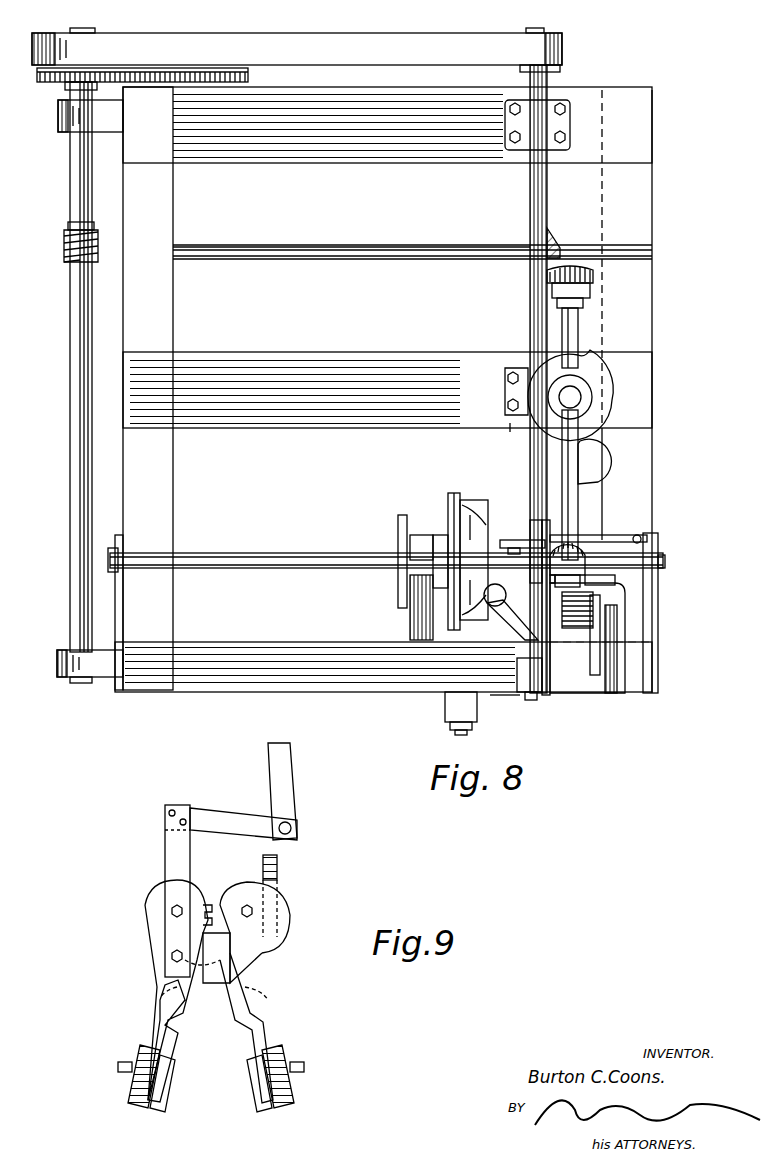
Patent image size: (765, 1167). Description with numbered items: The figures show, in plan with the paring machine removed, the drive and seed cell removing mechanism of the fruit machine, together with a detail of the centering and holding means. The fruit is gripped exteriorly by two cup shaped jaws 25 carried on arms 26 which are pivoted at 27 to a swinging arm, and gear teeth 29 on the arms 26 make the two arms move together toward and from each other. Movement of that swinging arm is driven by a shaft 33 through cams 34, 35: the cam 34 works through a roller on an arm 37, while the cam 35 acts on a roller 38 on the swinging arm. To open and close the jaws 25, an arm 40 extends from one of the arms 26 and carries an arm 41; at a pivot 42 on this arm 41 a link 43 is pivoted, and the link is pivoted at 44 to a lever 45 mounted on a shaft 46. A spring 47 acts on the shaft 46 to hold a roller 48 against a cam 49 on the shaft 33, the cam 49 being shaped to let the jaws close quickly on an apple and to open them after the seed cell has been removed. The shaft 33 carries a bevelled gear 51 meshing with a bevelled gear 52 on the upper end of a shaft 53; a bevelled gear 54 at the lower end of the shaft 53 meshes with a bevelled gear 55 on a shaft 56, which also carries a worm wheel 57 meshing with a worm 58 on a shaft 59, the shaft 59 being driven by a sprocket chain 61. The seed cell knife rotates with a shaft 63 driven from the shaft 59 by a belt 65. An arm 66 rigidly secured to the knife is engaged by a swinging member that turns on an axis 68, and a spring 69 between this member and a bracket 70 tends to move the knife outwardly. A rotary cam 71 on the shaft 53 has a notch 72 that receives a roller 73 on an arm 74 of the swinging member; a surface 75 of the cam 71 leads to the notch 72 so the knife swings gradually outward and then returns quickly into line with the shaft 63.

In FIG. 9, the cup shaped jaws 25 is at (162, 1095).
In FIG. 9, the arms 26 is at (172, 1002).
In FIG. 9, the pivot 27 is at (172, 912).
In FIG. 9, the gear teeth 29 is at (212, 905).
In FIG. 8, the shaft 33 is at (276, 553).
In FIG. 8, the cam 34 is at (402, 515).
In FIG. 8, the cam 35 is at (453, 496).
In FIG. 8, the arm 37 is at (430, 625).
In FIG. 8, the roller 38 is at (480, 500).
In FIG. 9, the arm 40 is at (168, 850).
In FIG. 9, the arm 41 is at (228, 827).
In FIG. 9, the pivot 42 is at (292, 826).
In FIG. 9, the link 43 is at (295, 775).
In FIG. 8, the pivot 44 is at (531, 700).
In FIG. 8, the lever 45 is at (548, 660).
In FIG. 8, the shaft 46 is at (600, 600).
In FIG. 8, the spring 47 is at (600, 612).
In FIG. 8, the roller 48 is at (562, 530).
In FIG. 8, the cam 49 is at (543, 528).
In FIG. 8, the bevelled gear 51 is at (598, 528).
In FIG. 8, the bevelled gear 52 is at (612, 532).
In FIG. 8, the shaft 53 is at (580, 320).
In FIG. 8, the bevelled gear 54 is at (595, 270).
In FIG. 8, the bevelled gear 55 is at (553, 240).
In FIG. 8, the shaft 56 is at (330, 246).
In FIG. 8, the worm wheel 57 is at (69, 391).
In FIG. 8, the worm 58 is at (62, 250).
In FIG. 8, the shaft 59 is at (78, 470).
In FIG. 8, the sprocket chain 61 is at (228, 70).
In FIG. 8, the shaft 63 is at (545, 193).
In FIG. 8, the belt 65 is at (545, 52).
In FIG. 8, the arm 66 is at (516, 540).
In FIG. 8, the axis 68 is at (658, 542).
In FIG. 8, the spring 69 is at (630, 582).
In FIG. 8, the bracket 70 is at (637, 640).
In FIG. 8, the rotary cam 71 is at (600, 375).
In FIG. 8, the notch 72 is at (600, 360).
In FIG. 8, the roller 73 is at (600, 450).
In FIG. 8, the arm 74 is at (580, 538).
In FIG. 8, the cam surface 75 is at (533, 370).